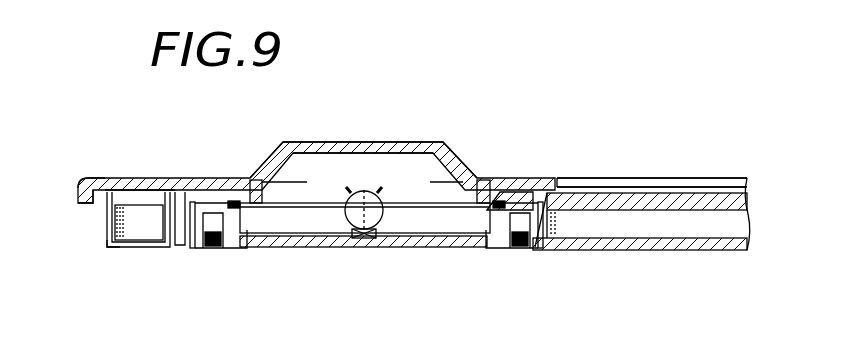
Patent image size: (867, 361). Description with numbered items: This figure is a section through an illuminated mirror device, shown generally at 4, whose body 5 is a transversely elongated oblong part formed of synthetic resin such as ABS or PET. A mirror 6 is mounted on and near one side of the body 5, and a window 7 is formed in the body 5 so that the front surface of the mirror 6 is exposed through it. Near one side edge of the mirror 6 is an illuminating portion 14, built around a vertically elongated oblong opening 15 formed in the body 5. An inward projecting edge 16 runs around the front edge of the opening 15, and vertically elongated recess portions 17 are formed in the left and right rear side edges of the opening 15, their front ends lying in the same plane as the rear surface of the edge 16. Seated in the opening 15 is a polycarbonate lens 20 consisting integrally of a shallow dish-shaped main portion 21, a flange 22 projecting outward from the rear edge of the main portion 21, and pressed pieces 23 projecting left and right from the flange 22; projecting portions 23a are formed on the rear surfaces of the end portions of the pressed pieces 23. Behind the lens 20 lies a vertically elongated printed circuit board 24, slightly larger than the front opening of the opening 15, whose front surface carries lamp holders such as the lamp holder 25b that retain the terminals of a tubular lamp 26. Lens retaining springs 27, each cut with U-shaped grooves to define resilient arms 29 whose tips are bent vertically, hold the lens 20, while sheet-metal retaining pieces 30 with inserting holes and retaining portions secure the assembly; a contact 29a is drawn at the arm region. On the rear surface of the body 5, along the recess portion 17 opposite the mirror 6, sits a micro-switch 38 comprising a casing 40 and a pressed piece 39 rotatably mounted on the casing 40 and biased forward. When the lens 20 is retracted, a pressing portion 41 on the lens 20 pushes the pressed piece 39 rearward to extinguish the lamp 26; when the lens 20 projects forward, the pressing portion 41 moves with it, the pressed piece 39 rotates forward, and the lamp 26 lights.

The connector assembly 4 is at (617, 121).
The body 5 is at (107, 178).
The mirror 6 is at (672, 203).
The window 7 is at (560, 185).
The illuminating portion 14 is at (341, 136).
The opening 15 is at (258, 178).
The inward projecting edge 16 is at (244, 178).
The recess portion 17 is at (186, 230).
The lens 20 is at (406, 141).
The main portion 21 is at (368, 141).
The flange 22 is at (505, 192).
The pressed piece 23 is at (204, 200).
The projecting portion 23a is at (240, 212).
The printed circuit board 24 is at (303, 249).
The lamp holder 25b is at (378, 233).
The tubular lamp 26 is at (364, 194).
The lens retaining spring 27 is at (205, 248).
The resilient arm 29 is at (217, 246).
The contact 29a is at (230, 202).
The retaining piece 30 is at (247, 252).
The micro-switch 38 is at (104, 220).
The pressed piece 39 is at (137, 215).
The casing 40 is at (105, 237).
The pressing portion 41 is at (125, 178).